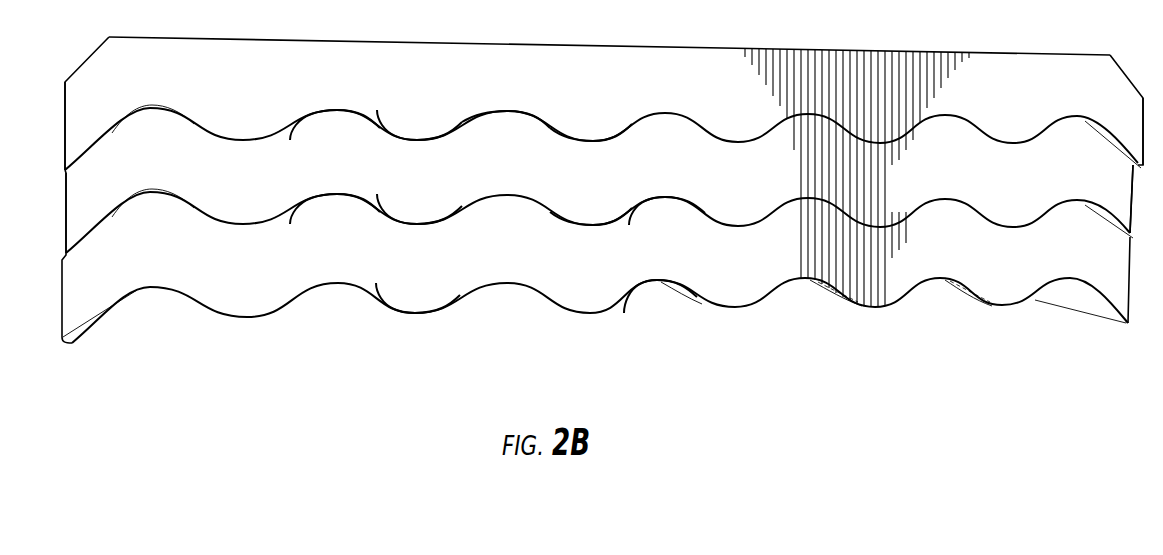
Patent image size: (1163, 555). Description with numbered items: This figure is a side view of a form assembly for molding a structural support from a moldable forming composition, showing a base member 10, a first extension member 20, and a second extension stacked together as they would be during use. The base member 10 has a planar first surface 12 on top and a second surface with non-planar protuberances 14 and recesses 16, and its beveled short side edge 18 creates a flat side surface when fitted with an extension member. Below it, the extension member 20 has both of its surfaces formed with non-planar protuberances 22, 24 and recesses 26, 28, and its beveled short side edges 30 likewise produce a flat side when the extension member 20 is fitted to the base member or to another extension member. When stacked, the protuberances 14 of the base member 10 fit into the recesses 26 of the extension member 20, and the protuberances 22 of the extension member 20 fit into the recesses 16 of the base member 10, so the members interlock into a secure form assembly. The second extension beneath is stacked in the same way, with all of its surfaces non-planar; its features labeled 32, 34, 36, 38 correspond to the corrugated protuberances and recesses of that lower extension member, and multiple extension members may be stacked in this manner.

The base member 10 is at (604, 103).
The first surface 12 is at (344, 46).
The non-planar protuberance 14 is at (423, 140).
The recess 16 is at (513, 113).
The short side edge 18 is at (65, 121).
The extension member 20 is at (599, 181).
The non-planar protuberance 22 is at (352, 115).
The non-planar protuberance 24 is at (415, 222).
The recess 26 is at (588, 142).
The recess 28 is at (655, 195).
The short side edge 30 is at (65, 217).
The ridge of third layer 32 is at (353, 200).
The valley of third layer 34 is at (410, 311).
The ridge of third layer 36 is at (584, 227).
The peak of third layer 38 is at (648, 282).